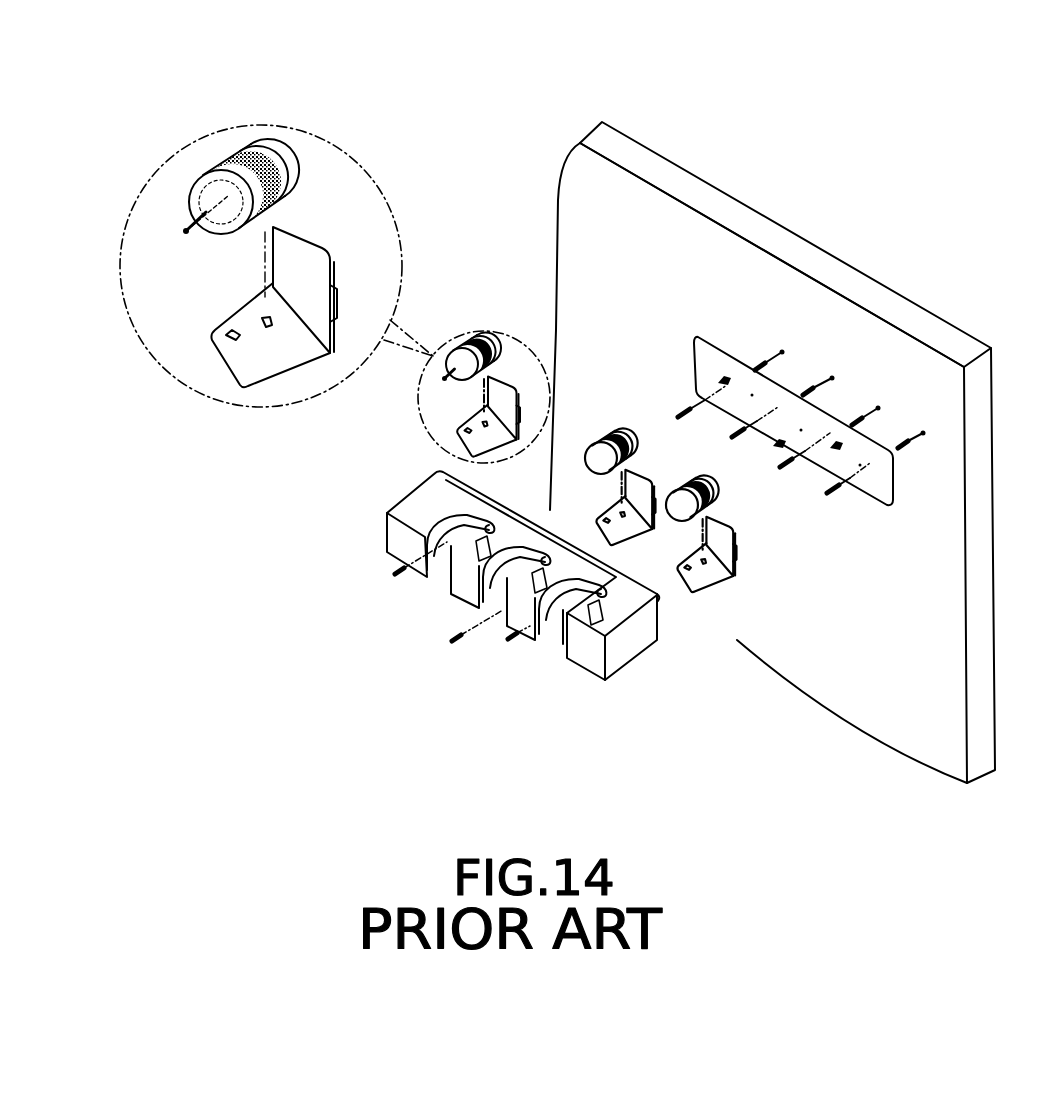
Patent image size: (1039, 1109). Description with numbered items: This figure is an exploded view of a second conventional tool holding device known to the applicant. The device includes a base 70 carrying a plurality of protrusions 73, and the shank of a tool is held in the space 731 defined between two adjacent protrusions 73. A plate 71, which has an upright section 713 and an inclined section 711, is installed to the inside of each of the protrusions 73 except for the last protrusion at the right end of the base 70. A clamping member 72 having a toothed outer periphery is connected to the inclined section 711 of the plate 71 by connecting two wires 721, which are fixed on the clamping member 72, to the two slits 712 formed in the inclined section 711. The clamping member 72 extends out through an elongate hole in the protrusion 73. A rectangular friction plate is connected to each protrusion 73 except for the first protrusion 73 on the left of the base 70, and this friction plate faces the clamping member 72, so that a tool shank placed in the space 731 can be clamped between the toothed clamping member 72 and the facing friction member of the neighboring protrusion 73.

The base 70 is at (667, 658).
The plate 71 is at (312, 285).
The clamping member 72 is at (243, 150).
The protrusions 73 is at (465, 583).
The inclined section 711 is at (270, 357).
The slits 712 is at (210, 352).
The upright section 713 is at (333, 273).
The wires 721 is at (188, 222).
The space 731 is at (555, 650).